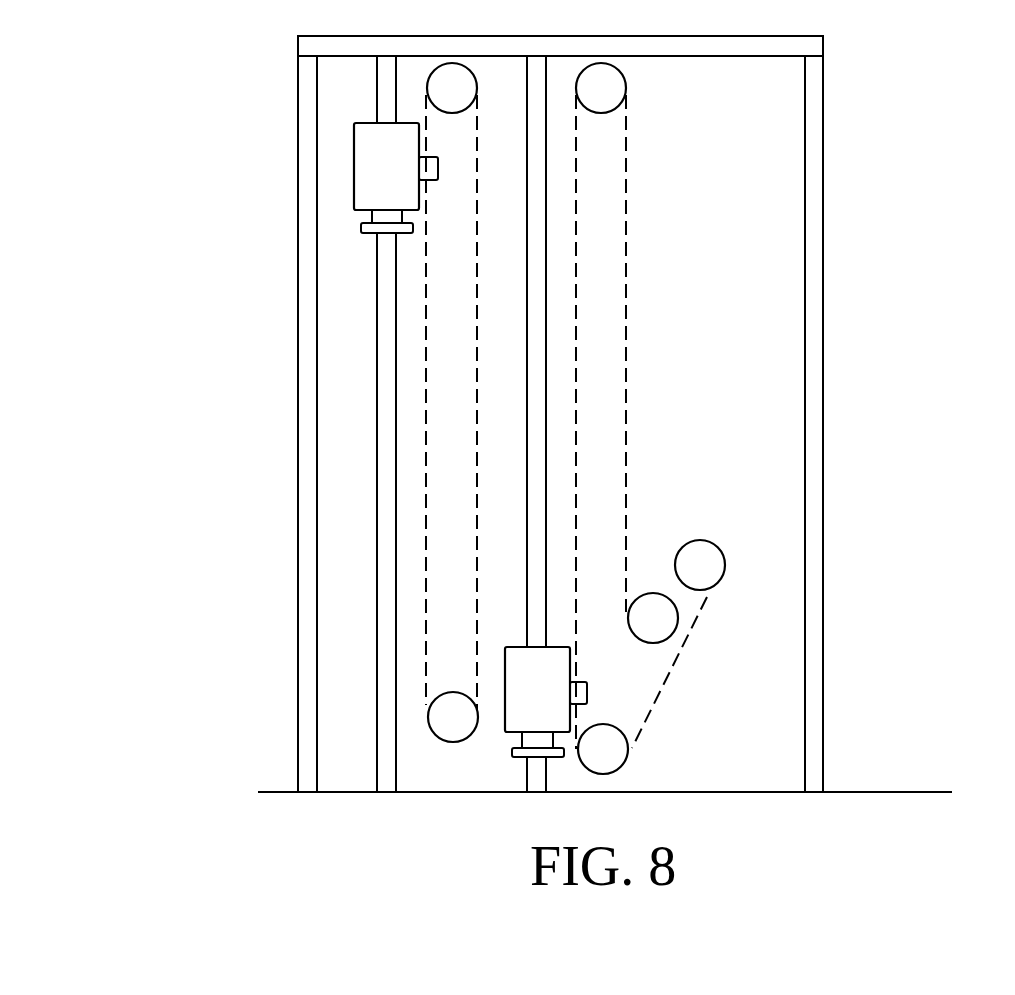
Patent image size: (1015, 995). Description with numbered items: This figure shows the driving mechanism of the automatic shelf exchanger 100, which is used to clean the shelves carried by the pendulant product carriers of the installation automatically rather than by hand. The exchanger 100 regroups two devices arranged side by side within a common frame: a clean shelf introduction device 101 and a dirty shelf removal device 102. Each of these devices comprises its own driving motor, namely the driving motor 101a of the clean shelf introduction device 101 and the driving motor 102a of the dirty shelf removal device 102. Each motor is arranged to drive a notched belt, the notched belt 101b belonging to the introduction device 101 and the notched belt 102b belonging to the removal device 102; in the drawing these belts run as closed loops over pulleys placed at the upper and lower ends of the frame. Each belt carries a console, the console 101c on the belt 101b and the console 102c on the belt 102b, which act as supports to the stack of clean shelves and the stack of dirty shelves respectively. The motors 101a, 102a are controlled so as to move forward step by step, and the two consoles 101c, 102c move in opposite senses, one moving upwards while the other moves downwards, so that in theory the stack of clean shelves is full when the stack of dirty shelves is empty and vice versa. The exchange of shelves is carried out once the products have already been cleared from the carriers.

The exchanger 100 is at (834, 302).
The clean shelf introduction device 101 is at (358, 460).
The driving motor 101a is at (447, 720).
The notched belt 101b is at (426, 295).
The console 101c is at (354, 177).
The dirty shelf removal device 102 is at (634, 303).
The driving motor 102a is at (698, 550).
The notched belt 102b is at (626, 188).
The console 102c is at (571, 652).